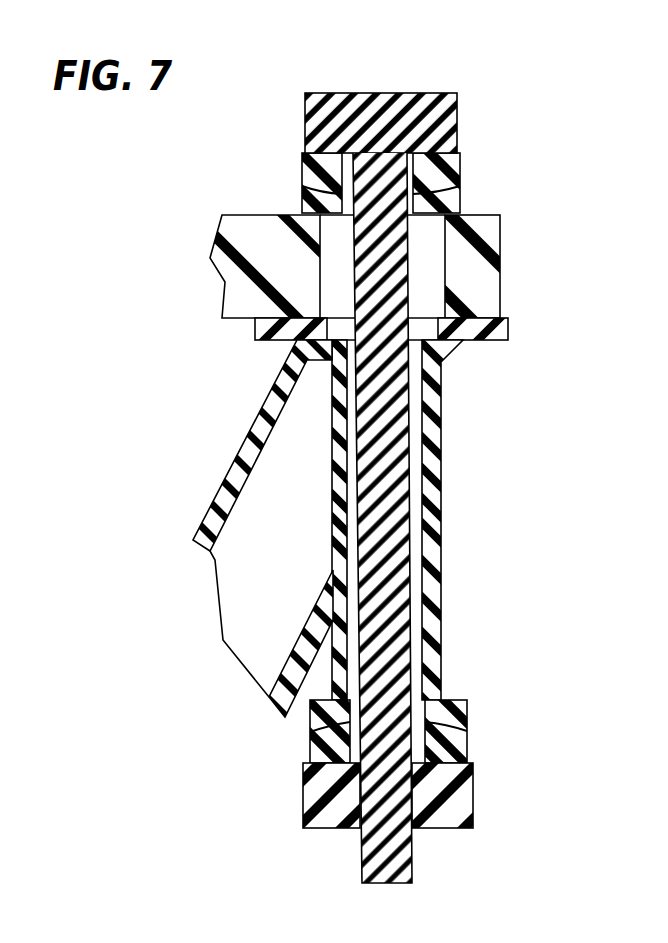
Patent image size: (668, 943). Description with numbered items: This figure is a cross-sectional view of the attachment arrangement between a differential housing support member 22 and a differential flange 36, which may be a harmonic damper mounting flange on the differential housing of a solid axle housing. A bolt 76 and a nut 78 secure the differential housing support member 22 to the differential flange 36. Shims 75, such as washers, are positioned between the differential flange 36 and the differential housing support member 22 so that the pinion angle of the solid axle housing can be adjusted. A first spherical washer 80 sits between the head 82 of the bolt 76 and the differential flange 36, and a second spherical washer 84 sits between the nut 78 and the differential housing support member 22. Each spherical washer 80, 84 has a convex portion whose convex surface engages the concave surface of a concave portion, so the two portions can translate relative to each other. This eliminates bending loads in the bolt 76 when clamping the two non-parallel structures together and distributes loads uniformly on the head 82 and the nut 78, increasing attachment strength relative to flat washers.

The head 82 is at (440, 93).
The first spherical washer 80 is at (472, 155).
The differential flange 36 is at (485, 286).
The shims 75 is at (500, 331).
The differential housing support member 22 is at (277, 392).
The second spherical washer 84 is at (475, 703).
The nut 78 is at (465, 795).
The bolt 76 is at (372, 860).